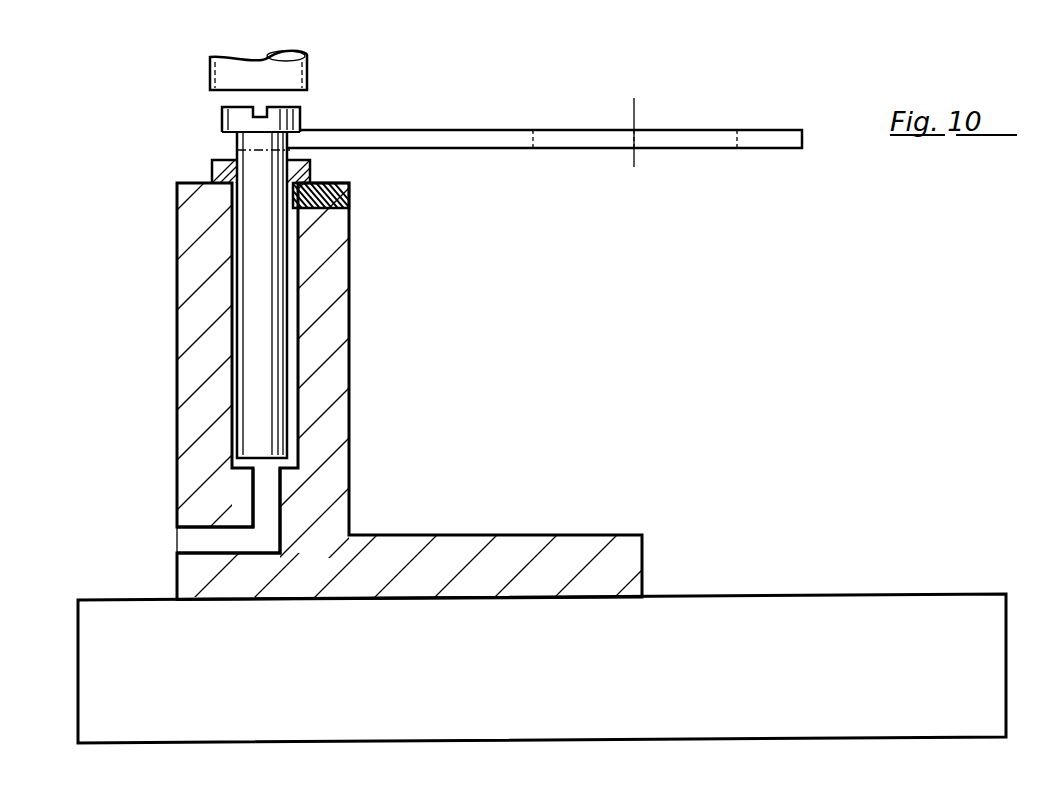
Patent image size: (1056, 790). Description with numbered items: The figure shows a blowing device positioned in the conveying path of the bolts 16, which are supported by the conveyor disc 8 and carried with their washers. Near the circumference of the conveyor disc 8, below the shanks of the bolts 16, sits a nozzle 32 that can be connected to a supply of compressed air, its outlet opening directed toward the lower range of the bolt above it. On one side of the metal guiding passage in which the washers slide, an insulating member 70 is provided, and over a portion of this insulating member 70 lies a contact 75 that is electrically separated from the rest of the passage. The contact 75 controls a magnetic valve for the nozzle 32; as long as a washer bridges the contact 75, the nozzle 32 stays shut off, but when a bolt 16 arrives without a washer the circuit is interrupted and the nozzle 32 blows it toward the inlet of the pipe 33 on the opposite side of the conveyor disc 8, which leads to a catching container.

The conveyor disc 8 is at (472, 130).
The bolt 16 is at (277, 283).
The nozzle 32 is at (270, 482).
The pipe 33 is at (309, 68).
The insulating member 70 is at (349, 198).
The contact 75 is at (325, 183).